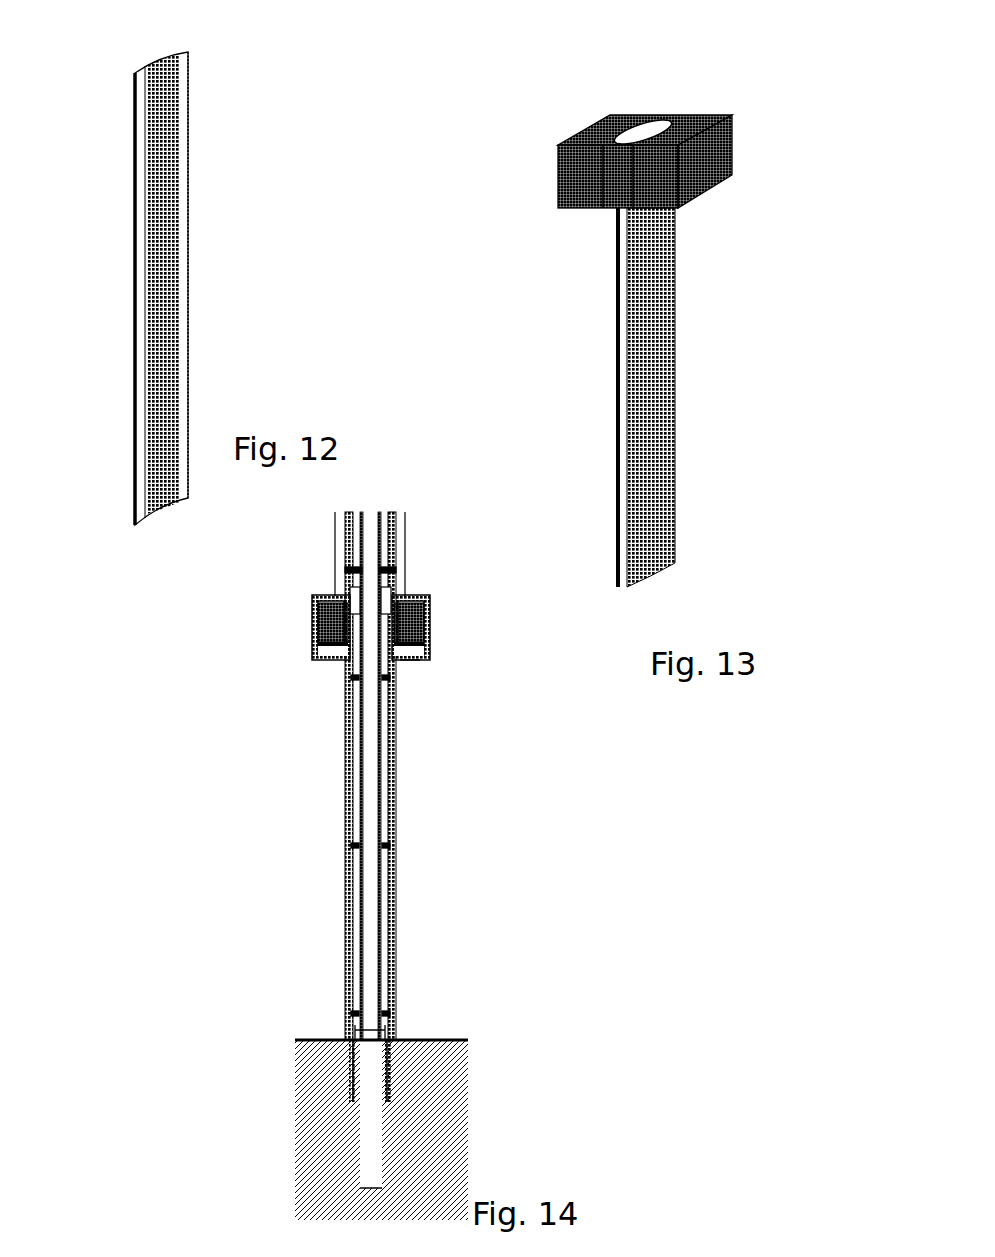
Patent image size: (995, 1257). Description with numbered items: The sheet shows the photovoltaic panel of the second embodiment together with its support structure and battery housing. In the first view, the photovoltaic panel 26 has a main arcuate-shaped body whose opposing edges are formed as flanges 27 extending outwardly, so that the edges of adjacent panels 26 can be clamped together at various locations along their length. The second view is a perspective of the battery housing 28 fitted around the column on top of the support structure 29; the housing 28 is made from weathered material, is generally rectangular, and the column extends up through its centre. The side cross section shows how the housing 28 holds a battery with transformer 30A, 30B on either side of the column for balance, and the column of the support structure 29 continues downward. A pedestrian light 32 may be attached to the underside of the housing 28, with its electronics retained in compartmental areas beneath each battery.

In FIG. 12, the photovoltaic panel 26 is at (153, 463).
In FIG. 12, the flanges 27 is at (135, 140).
In FIG. 13, the battery housing 28 is at (720, 152).
In FIG. 14, the battery housing 28 is at (423, 587).
In FIG. 13, the support structure 29 is at (662, 455).
In FIG. 14, the battery with transformer 30A is at (322, 613).
In FIG. 14, the battery with transformer 30B is at (425, 638).
In FIG. 14, the pedestrian light 32 is at (408, 667).